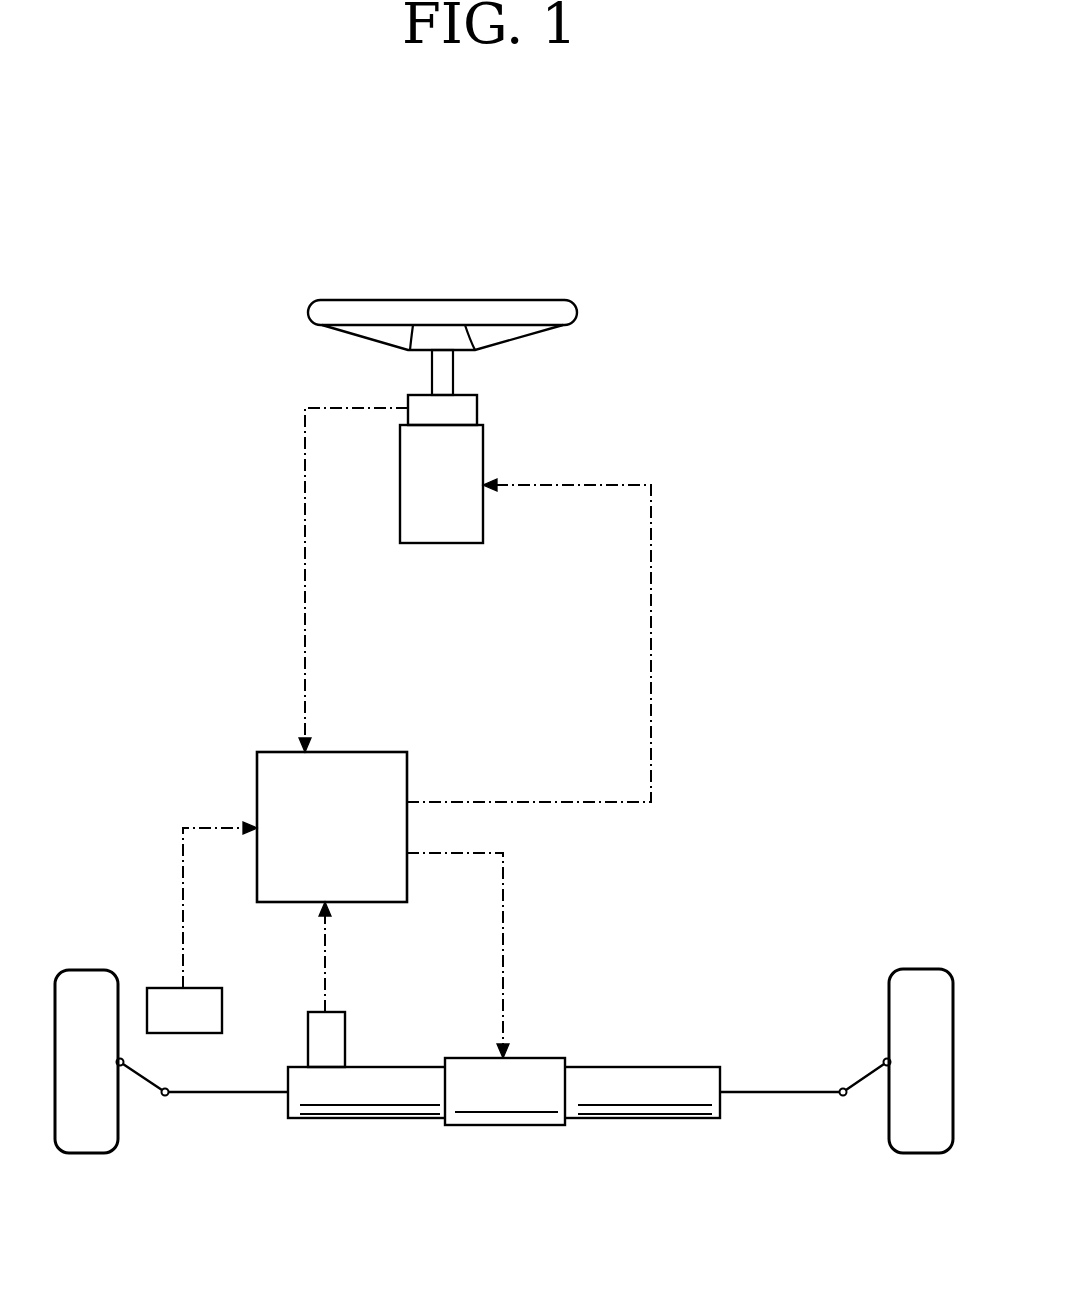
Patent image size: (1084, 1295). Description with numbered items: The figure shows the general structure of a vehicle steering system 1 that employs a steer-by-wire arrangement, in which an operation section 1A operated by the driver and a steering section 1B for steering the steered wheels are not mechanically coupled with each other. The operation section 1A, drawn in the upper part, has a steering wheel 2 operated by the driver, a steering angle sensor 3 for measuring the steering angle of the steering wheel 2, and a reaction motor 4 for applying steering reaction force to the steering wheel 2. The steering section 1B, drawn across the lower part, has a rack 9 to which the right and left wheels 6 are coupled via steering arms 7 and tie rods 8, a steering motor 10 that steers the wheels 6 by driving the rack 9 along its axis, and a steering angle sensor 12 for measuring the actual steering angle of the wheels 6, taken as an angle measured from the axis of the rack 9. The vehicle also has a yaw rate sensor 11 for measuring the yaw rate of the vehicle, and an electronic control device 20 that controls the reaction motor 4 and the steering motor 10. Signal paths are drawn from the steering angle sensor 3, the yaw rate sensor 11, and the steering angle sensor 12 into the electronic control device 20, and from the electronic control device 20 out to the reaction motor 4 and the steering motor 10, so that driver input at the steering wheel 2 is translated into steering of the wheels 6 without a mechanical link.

The vehicle steering system 1 is at (704, 729).
The operation section 1A is at (300, 312).
The steering section 1B is at (627, 1048).
The steering wheel 2 is at (503, 310).
The steering angle sensor 3 is at (470, 408).
The reaction motor 4 is at (475, 513).
The wheels 6 is at (90, 1153).
The steering arms 7 is at (140, 1080).
The tie rods 8 is at (237, 1095).
The rack 9 is at (358, 1120).
The steering motor 10 is at (508, 1127).
The yaw rate sensor 11 is at (162, 988).
The steering angle sensor 12 is at (312, 1015).
The electronic control device 20 is at (398, 775).